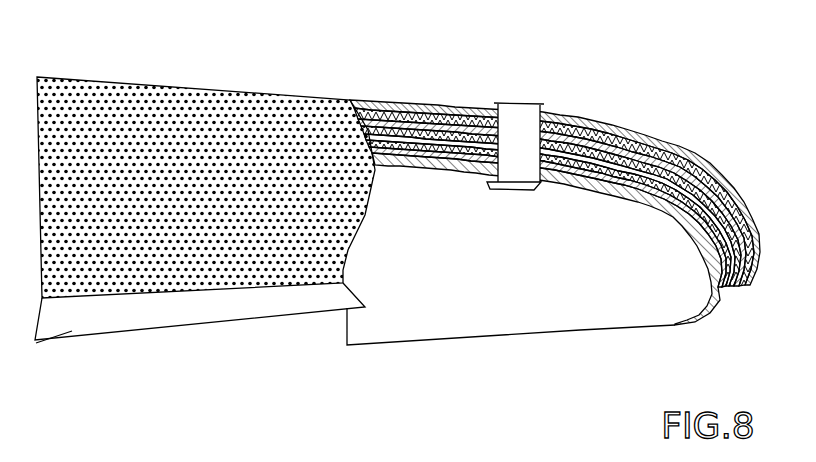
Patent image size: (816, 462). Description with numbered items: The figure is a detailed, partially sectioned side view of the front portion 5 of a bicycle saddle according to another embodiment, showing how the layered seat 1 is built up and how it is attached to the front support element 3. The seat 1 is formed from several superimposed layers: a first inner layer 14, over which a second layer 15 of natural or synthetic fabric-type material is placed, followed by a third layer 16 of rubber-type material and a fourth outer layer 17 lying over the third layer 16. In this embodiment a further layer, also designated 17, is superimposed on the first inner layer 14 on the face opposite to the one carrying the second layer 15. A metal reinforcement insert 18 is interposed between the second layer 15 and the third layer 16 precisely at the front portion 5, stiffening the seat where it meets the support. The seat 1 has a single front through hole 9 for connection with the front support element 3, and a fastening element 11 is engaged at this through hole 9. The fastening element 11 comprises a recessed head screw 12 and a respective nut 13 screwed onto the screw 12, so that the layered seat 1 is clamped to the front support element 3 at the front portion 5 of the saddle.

The seat 1 is at (417, 200).
The front support element 3 is at (693, 270).
The front portion 5 is at (260, 107).
The front through hole 9 is at (522, 156).
The fastening element 11 is at (547, 100).
The recessed head screw 12 is at (521, 190).
The nut 13 is at (512, 102).
The first inner layer 14 is at (628, 201).
The second layer 15 is at (417, 168).
The third layer 16 is at (374, 106).
The fourth outer layer 17 is at (410, 108).
The metal reinforcement insert 18 is at (578, 188).